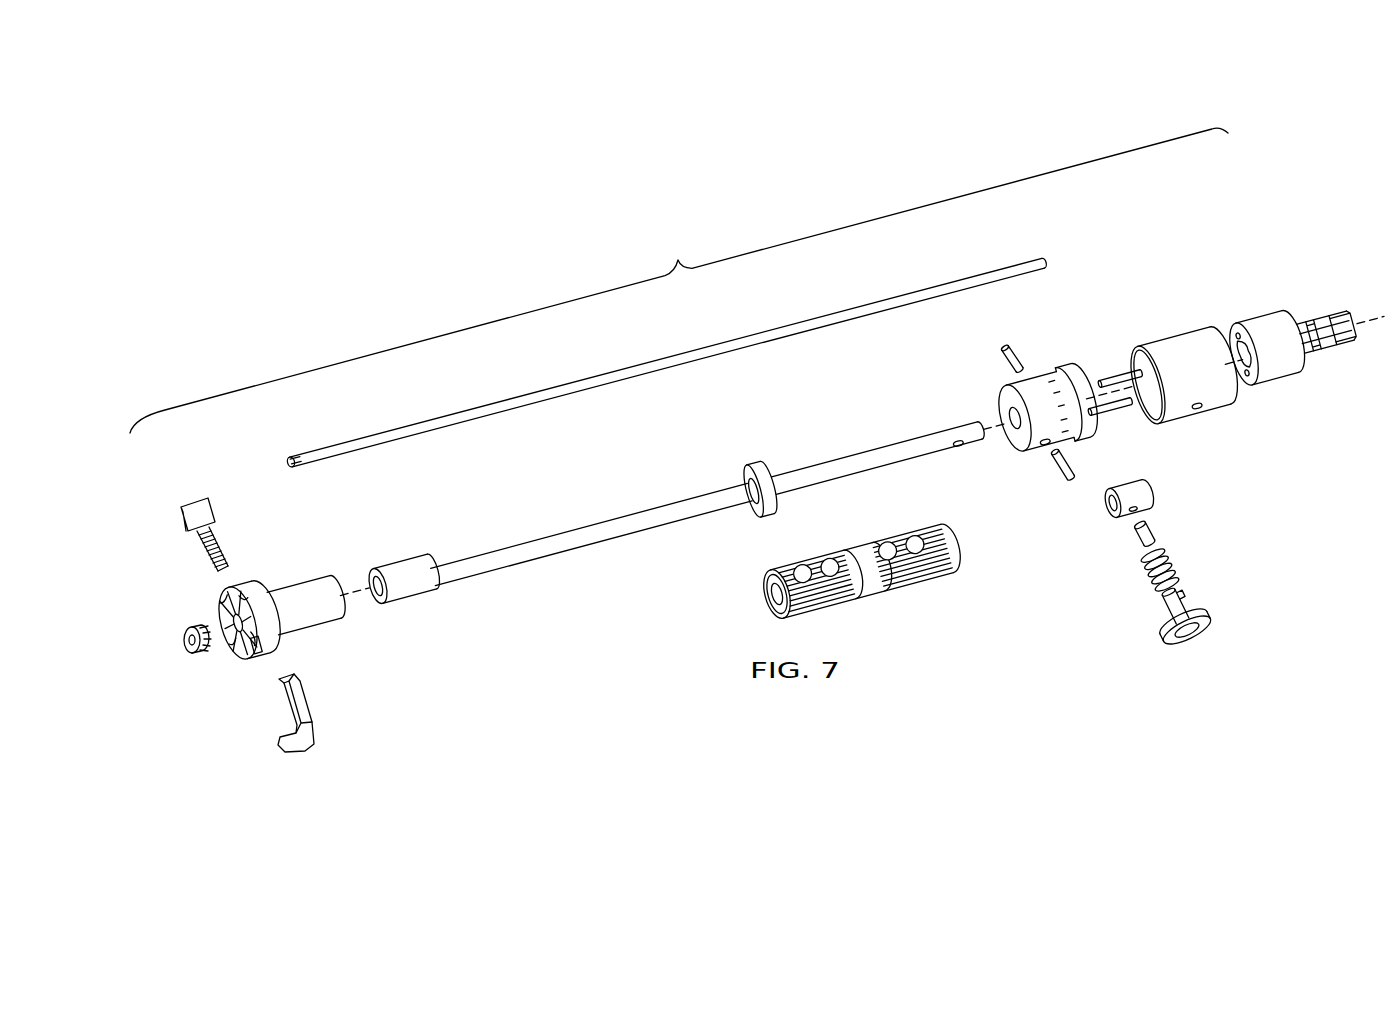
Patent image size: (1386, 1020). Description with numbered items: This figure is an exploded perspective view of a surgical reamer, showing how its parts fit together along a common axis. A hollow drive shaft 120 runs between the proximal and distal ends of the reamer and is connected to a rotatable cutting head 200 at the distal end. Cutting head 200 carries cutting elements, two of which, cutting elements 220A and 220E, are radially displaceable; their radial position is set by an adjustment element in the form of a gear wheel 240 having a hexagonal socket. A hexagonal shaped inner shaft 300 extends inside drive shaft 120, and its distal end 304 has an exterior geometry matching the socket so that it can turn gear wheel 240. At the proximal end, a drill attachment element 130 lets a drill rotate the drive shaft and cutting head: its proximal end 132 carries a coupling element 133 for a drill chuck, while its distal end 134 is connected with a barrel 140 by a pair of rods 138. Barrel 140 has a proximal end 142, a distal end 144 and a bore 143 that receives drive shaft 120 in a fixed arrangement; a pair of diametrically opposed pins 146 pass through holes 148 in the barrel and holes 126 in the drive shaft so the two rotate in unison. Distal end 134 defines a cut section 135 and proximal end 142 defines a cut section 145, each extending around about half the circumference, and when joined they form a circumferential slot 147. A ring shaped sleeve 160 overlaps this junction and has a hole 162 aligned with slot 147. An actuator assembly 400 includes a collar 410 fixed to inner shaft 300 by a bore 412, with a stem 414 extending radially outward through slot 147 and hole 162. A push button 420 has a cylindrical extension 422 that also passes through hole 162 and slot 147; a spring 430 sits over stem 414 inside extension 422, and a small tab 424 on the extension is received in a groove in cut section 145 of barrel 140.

The drive shaft 120 is at (727, 523).
The second pair of diametrically opposed holes 126 is at (957, 447).
The drill attachment element 130 is at (1282, 378).
The proximal end 132 is at (1333, 350).
The coupling element 133 is at (1333, 320).
The distal end 134 is at (1268, 322).
The cut section 135 is at (1249, 377).
The rods 138 is at (1120, 372).
The barrel 140 is at (1023, 380).
The proximal end 142 is at (1087, 375).
The bore 143 is at (1005, 420).
The distal end 144 is at (1001, 405).
The cut section 145 is at (1058, 372).
The pins 146 is at (1004, 352).
The circumferential slot 147 is at (1250, 386).
The first pair of diametrically opposed holes 148 is at (1045, 443).
The ring shaped sleeve 160 is at (1196, 375).
The hole 162 is at (1198, 409).
The cutting head 200 is at (318, 635).
The cutting element 220A is at (183, 523).
The cutting element 220E is at (283, 742).
The gear wheel 240 is at (193, 654).
The inner shaft 300 is at (622, 351).
The distal end 304 is at (290, 456).
The actuator assembly 400 is at (1169, 646).
The collar 410 is at (1096, 527).
The bore 412 is at (1106, 502).
The stem 414 is at (1153, 534).
The push button 420 is at (1181, 646).
The cylindrical extension 422 is at (1172, 612).
The tab 424 is at (1162, 599).
The spring 430 is at (1178, 566).